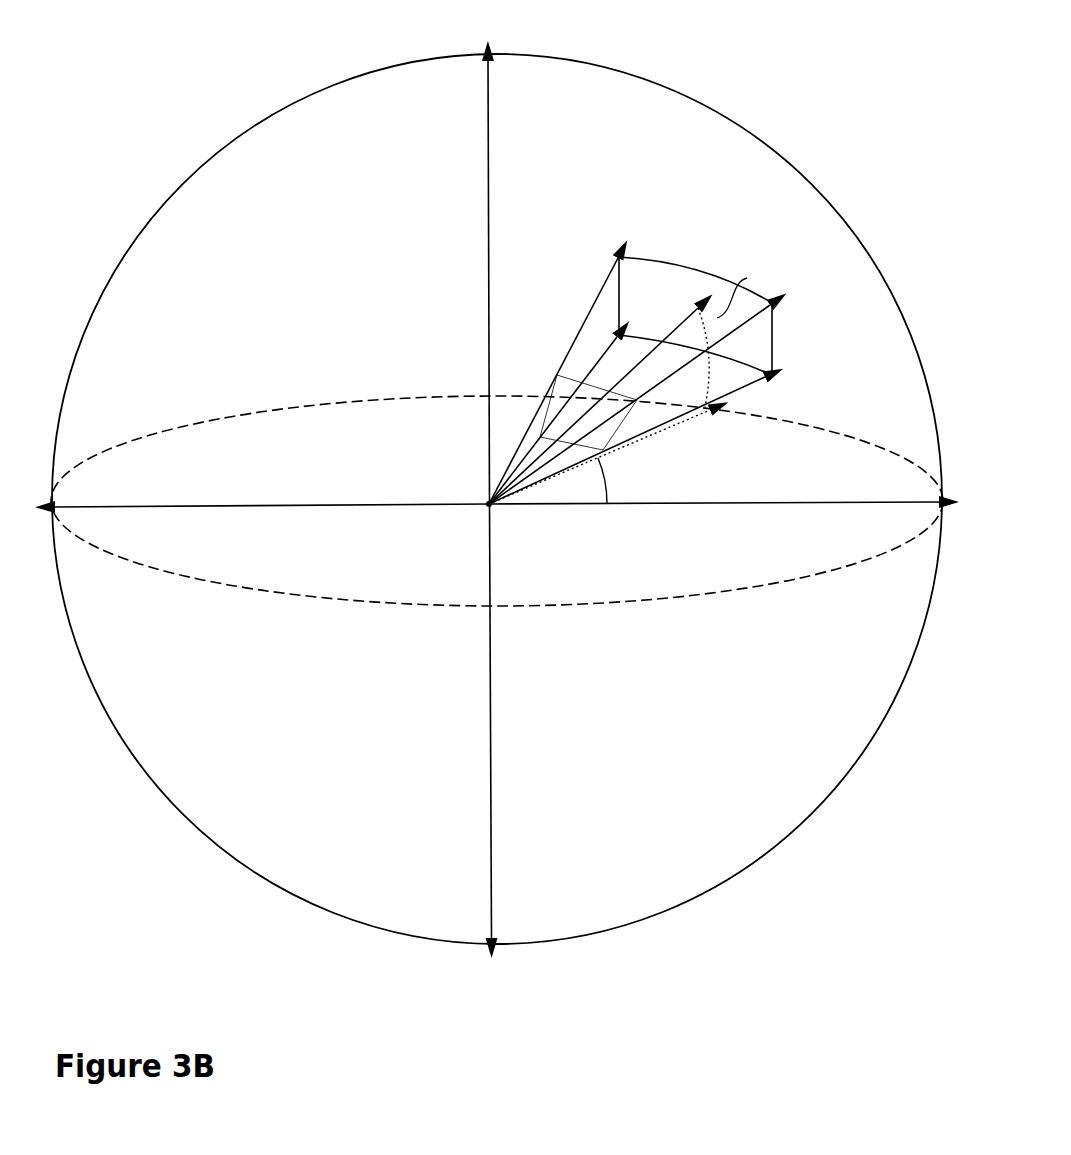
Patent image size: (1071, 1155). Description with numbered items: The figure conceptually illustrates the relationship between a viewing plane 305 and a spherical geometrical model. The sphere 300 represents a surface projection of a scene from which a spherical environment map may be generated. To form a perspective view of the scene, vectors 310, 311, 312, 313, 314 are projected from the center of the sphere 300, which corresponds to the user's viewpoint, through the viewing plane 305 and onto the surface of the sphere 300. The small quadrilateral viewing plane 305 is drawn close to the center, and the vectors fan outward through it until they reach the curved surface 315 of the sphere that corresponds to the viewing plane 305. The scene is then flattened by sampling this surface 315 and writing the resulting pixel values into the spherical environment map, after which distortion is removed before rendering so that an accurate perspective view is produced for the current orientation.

The sphere 300 is at (630, 73).
The viewing plane 305 is at (560, 388).
The vector 310 is at (587, 292).
The vector 311 is at (592, 358).
The vector 312 is at (737, 393).
The vector 313 is at (753, 322).
The vector 314 is at (672, 323).
The surface of the sphere 315 is at (697, 275).